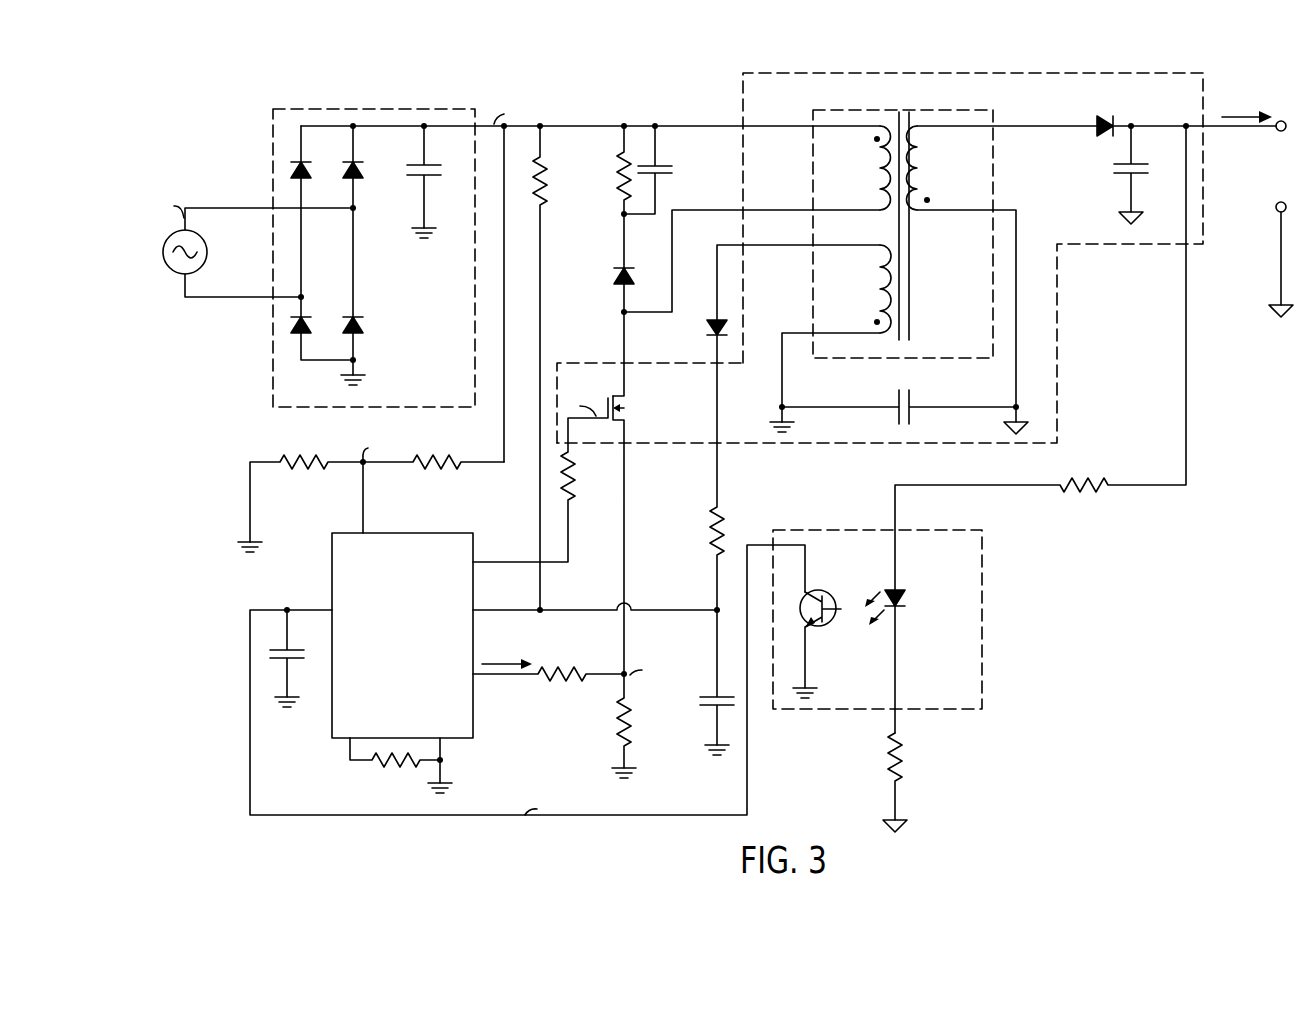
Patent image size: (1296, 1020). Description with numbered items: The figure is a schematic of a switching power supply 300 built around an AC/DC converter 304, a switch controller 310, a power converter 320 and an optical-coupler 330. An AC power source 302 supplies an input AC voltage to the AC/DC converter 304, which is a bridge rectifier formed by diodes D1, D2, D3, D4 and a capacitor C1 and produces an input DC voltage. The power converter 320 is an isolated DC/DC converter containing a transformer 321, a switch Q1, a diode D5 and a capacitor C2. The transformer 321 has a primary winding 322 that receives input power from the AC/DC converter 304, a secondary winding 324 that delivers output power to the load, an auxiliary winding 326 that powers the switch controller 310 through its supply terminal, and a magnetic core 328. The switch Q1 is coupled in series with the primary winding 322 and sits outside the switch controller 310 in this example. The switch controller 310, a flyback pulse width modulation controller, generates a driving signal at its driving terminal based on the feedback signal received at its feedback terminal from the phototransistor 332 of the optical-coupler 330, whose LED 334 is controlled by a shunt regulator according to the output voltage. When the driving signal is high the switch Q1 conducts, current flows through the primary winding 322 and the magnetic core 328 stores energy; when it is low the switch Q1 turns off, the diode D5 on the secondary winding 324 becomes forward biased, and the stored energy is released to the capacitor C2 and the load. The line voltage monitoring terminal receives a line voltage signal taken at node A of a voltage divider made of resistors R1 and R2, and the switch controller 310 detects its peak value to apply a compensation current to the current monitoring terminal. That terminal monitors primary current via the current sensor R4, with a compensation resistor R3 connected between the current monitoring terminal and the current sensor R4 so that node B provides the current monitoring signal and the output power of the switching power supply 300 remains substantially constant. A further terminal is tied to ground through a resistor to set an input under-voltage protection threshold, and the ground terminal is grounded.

The switching power supply 300 is at (230, 114).
The AC power source 302 is at (169, 266).
The AC/DC converter 304 is at (404, 110).
The switch controller 310 is at (440, 533).
The power converter 320 is at (1099, 73).
The transformer 321 is at (956, 114).
The primary winding 322 is at (877, 168).
The secondary winding 324 is at (928, 168).
The auxiliary winding 326 is at (877, 288).
The magnetic core 328 is at (912, 290).
The optical-coupler 330 is at (918, 530).
The phototransistor 332 is at (829, 597).
The LED 334 is at (904, 595).
The diode D1 is at (309, 164).
The diode D2 is at (361, 164).
The diode D3 is at (309, 319).
The diode D4 is at (361, 319).
The diode D5 is at (1112, 121).
The capacitor C1 is at (432, 164).
The capacitor C2 is at (1141, 168).
The resistor R1 is at (444, 454).
The resistor R2 is at (289, 454).
The compensation resistor R3 is at (567, 670).
The current sensor R4 is at (616, 736).
The switch Q1 is at (622, 406).